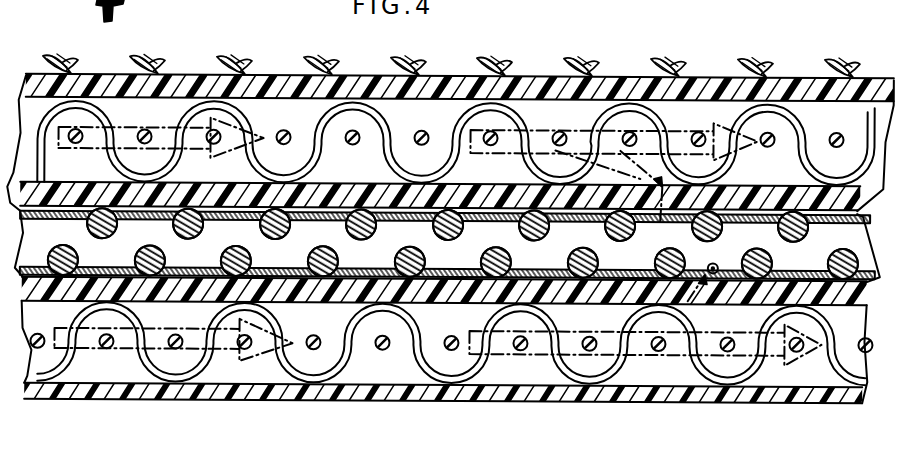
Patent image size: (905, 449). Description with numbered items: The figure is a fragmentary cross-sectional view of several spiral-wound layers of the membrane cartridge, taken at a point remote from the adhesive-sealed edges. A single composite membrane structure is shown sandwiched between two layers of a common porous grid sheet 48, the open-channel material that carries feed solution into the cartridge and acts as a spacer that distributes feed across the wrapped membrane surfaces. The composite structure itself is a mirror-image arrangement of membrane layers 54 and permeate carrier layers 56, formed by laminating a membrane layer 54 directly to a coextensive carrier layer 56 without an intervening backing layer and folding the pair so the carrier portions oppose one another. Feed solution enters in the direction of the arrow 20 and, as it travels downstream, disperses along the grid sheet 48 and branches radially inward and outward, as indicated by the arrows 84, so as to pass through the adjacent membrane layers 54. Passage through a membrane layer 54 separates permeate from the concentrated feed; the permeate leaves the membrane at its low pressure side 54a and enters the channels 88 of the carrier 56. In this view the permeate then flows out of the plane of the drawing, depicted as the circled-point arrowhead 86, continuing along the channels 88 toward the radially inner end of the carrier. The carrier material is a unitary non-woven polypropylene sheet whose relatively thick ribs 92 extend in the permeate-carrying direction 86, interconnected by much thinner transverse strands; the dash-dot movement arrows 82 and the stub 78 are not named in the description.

The feed solution direction arrow 20 is at (88, 146).
The porous grid sheet 48 is at (397, 128).
The membrane layer 54 is at (700, 86).
The low pressure side of membrane 54a is at (437, 283).
The permeate carrier layer 56 is at (470, 252).
The connector stub 78 is at (112, 13).
The movement arrow 82 is at (713, 125).
The feed branching arrows 84 is at (612, 178).
The permeate flow arrowhead 86 is at (720, 264).
The carrier channels 88 is at (568, 262).
The thick ribs 92 is at (262, 233).